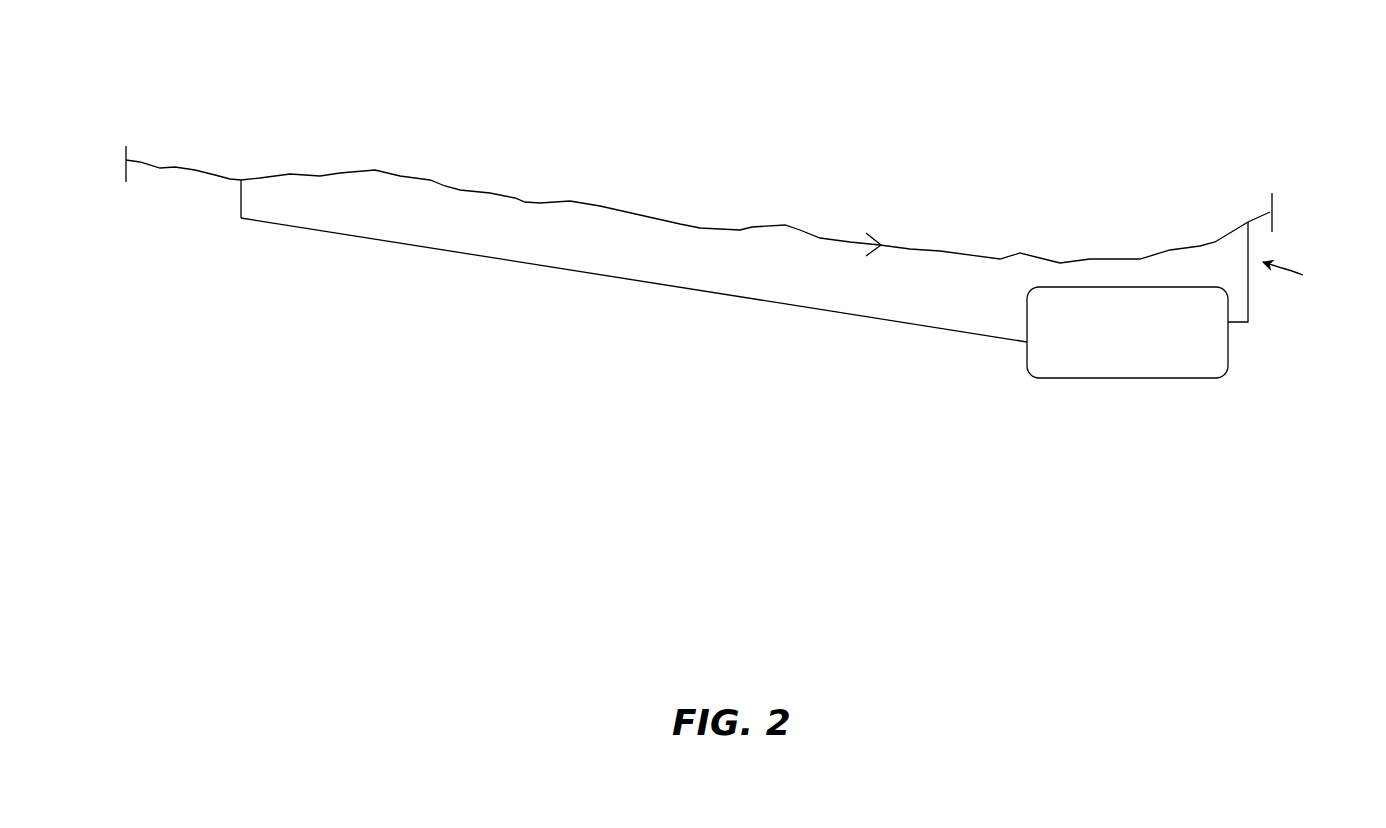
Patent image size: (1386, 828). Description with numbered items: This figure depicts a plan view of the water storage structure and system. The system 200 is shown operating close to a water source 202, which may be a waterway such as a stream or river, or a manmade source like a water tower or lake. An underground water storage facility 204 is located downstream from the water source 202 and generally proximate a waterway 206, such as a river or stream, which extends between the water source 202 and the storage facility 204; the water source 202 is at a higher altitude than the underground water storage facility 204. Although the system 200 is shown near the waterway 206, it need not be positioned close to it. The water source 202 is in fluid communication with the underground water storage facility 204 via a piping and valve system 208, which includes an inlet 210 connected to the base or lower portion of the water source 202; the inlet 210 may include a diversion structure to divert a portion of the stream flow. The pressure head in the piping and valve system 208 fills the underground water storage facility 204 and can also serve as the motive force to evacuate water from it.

The system 200 is at (1127, 109).
The water source 202 is at (282, 163).
The underground water storage facility 204 is at (1123, 391).
The waterway 206 is at (430, 158).
The piping and valve system 208 is at (524, 420).
The inlet 210 is at (219, 202).